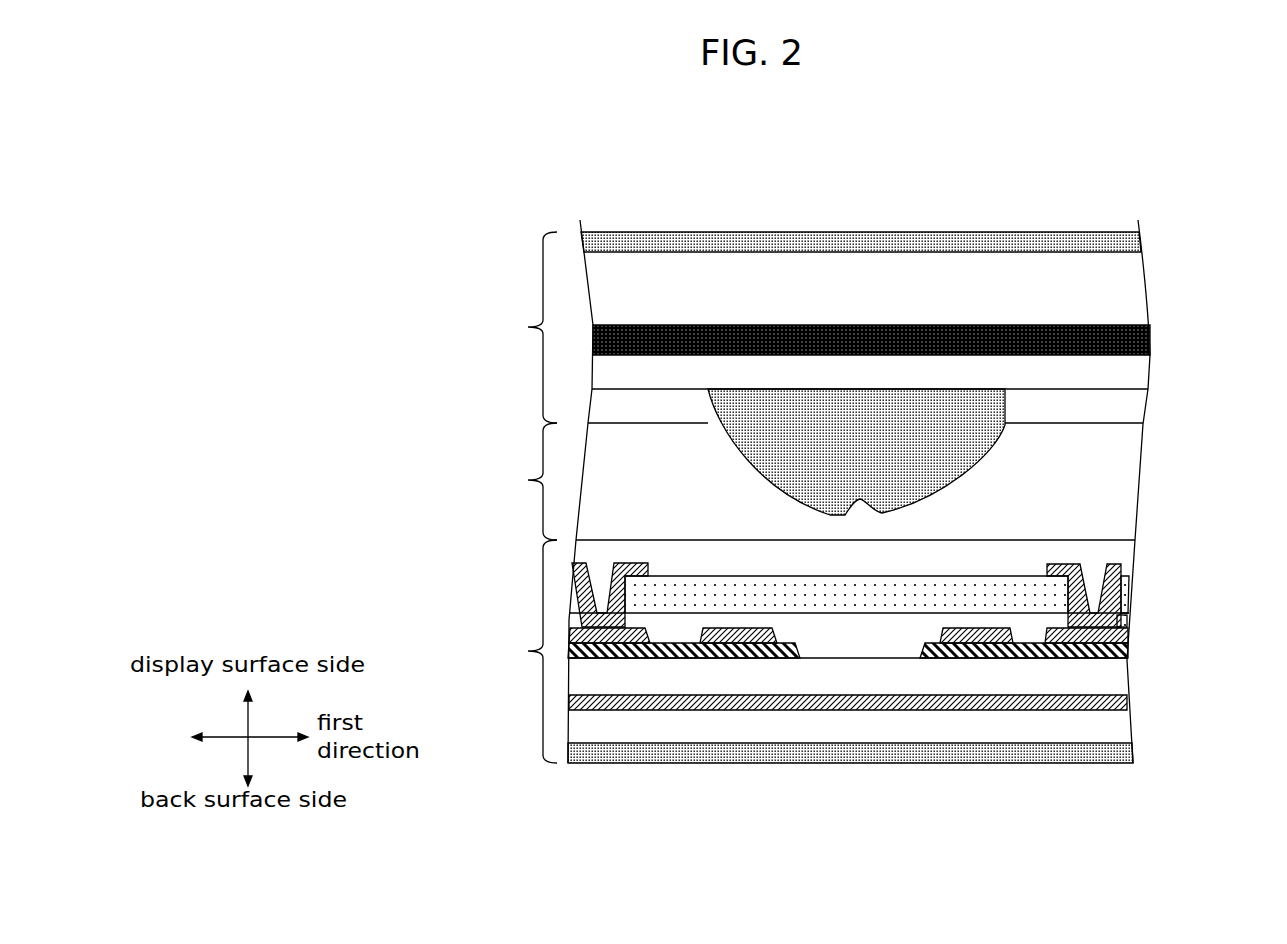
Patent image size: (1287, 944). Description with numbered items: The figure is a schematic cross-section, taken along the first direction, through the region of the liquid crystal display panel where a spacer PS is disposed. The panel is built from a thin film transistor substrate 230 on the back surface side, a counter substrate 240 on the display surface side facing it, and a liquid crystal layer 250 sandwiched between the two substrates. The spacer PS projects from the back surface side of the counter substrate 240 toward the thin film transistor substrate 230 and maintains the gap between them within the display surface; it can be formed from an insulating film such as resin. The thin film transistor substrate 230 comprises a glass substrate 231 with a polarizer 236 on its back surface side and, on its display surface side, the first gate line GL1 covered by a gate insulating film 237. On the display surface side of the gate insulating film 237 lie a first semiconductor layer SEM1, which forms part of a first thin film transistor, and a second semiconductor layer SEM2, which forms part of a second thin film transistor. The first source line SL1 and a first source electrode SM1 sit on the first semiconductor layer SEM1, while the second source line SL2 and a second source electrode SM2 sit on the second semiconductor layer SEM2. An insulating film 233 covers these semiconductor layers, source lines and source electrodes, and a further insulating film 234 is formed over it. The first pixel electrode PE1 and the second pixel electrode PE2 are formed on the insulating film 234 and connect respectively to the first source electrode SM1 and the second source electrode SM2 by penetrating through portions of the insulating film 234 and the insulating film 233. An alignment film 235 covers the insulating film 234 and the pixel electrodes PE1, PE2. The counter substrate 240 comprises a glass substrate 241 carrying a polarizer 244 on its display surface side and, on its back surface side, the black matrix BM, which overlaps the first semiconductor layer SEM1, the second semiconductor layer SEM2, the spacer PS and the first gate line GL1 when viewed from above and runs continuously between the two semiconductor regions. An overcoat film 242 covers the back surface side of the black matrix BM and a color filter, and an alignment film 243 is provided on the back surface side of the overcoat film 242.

The counter substrate 240 is at (510, 327).
The liquid crystal layer 250 is at (510, 481).
The thin film transistor substrate 230 is at (510, 651).
The polarizer 244 is at (1139, 243).
The glass substrate 241 is at (1135, 295).
The black matrix BM is at (852, 325).
The overcoat film 242 is at (1137, 372).
The alignment film 243 is at (1135, 404).
The spacer PS is at (1000, 442).
The alignment film 235 is at (1125, 550).
The insulating film 234 is at (1128, 588).
The insulating film 233 is at (1128, 620).
The gate insulating film 237 is at (1115, 677).
The glass substrate 231 is at (1122, 727).
The polarizer 236 is at (1133, 757).
The first pixel electrode PE1 is at (590, 650).
The second pixel electrode PE2 is at (1087, 650).
The first semiconductor layer SEM1 is at (670, 650).
The second semiconductor layer SEM2 is at (1008, 650).
The first source line SL1 is at (740, 650).
The second source line SL2 is at (965, 650).
The first source electrode SM1 is at (633, 650).
The second source electrode SM2 is at (1060, 650).
The first gate line GL1 is at (875, 708).